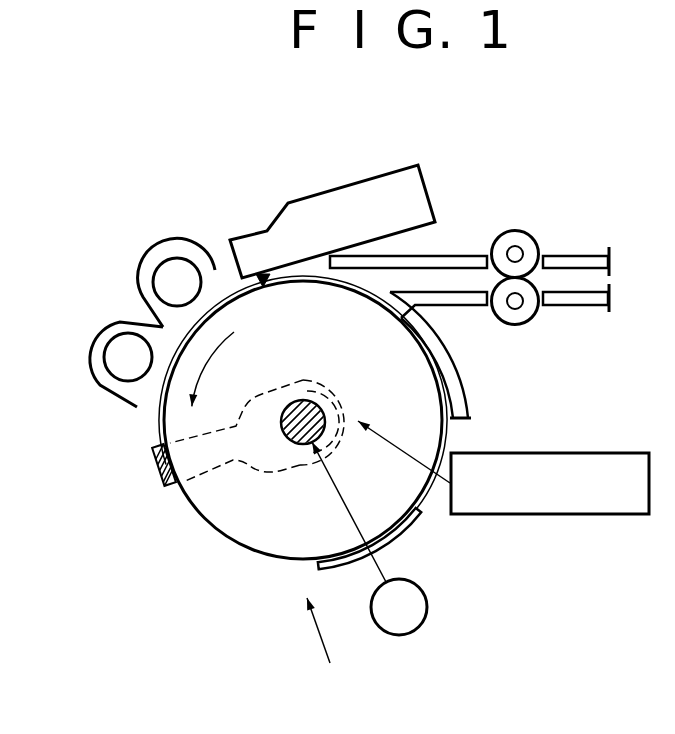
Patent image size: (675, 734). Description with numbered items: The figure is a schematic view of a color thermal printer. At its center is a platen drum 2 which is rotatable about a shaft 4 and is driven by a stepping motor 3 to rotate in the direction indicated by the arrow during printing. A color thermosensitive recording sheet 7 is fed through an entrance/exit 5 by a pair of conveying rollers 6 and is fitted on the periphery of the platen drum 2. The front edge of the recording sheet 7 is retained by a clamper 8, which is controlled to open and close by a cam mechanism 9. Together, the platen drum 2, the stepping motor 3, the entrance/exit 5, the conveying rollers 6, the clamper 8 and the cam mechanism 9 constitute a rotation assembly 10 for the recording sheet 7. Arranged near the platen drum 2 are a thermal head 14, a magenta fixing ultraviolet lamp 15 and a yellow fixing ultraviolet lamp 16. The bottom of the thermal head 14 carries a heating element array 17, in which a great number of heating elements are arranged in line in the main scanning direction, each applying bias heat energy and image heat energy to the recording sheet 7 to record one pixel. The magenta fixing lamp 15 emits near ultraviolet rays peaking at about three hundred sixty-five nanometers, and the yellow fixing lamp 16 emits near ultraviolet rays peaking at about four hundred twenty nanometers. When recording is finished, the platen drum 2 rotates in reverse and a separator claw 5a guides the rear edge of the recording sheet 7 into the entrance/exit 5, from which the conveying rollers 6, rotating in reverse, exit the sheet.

The platen drum 2 is at (243, 532).
The stepping motor 3 is at (428, 608).
The shaft 4 is at (319, 438).
The entrance/exit 5 is at (446, 278).
The separator claw 5a is at (383, 298).
The conveying rollers 6 is at (527, 239).
The color thermosensitive recording sheet 7 is at (418, 510).
The clamper 8 is at (156, 468).
The cam mechanism 9 is at (583, 452).
The rotation assembly 10 is at (327, 647).
The thermal head 14 is at (343, 188).
The magenta fixing ultraviolet lamp 15 is at (163, 268).
The yellow fixing ultraviolet lamp 16 is at (113, 350).
The heating element array 17 is at (264, 289).